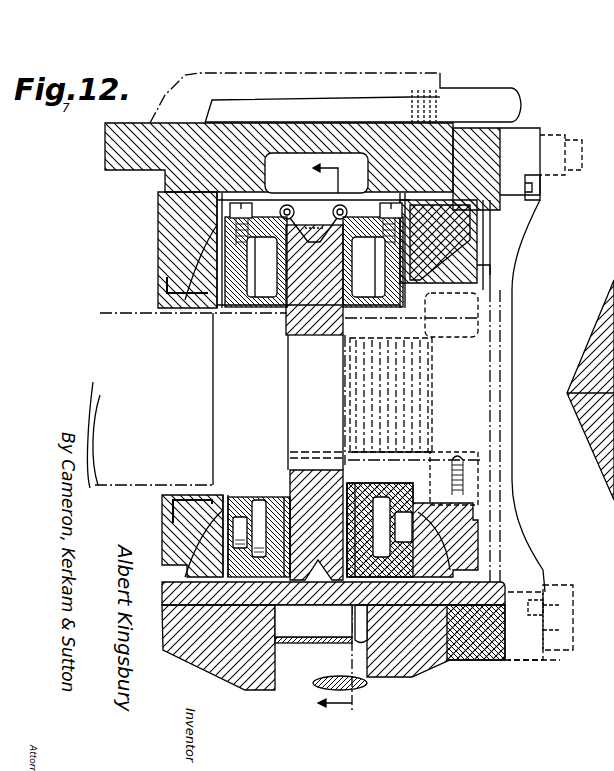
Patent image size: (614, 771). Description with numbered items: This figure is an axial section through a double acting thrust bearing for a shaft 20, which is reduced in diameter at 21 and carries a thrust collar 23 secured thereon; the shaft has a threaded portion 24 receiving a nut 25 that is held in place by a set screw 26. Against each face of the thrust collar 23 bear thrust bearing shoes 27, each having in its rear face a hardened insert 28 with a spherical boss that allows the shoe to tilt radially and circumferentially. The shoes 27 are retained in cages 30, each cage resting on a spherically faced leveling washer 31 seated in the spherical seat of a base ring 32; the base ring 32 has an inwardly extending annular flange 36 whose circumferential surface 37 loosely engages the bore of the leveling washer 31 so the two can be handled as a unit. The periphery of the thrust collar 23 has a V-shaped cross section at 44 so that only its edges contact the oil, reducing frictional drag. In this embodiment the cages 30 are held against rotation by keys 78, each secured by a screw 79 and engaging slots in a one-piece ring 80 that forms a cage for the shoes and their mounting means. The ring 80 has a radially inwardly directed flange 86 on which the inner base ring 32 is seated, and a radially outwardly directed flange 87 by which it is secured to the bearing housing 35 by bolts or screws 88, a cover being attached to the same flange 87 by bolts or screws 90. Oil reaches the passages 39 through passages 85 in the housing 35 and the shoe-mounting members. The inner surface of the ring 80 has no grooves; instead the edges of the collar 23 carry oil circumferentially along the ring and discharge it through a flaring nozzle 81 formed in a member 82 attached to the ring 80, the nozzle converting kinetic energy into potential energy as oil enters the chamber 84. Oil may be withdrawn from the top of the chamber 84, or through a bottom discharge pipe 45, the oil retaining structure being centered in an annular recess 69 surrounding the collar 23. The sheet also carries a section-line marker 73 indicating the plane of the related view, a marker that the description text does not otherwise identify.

The shaft 20 is at (160, 445).
The reduced diameter portion 21 is at (306, 408).
The thrust collar 23 is at (287, 325).
The threaded portion 24 is at (412, 418).
The nut 25 is at (463, 323).
The set screw 26 is at (470, 470).
The thrust bearing shoes 27 is at (276, 497).
The hardened insert 28 is at (248, 497).
The cage 30 is at (440, 242).
The leveling washer 31 is at (478, 263).
The base ring 32 is at (170, 258).
The bearing housing 35 is at (135, 160).
The annular flange 36 is at (178, 500).
The circumferential surface 37 is at (202, 497).
The passages 39 is at (412, 315).
The V-shaped periphery 44 is at (312, 562).
The pipe 45 is at (290, 670).
The annular recess 69 is at (502, 294).
The section line 73 is at (316, 437).
The key 78 is at (406, 205).
The screw 79 is at (384, 205).
The ring 80 is at (323, 600).
The nozzle 81 is at (313, 196).
The member 82 is at (313, 245).
The chamber 84 is at (305, 152).
The passages 85 is at (385, 66).
The radially inwardly directed flange 86 is at (166, 222).
The radially outwardly directed flange 87 is at (490, 168).
The bolts or screws 88 is at (562, 160).
The bolts or screws 90 is at (541, 190).